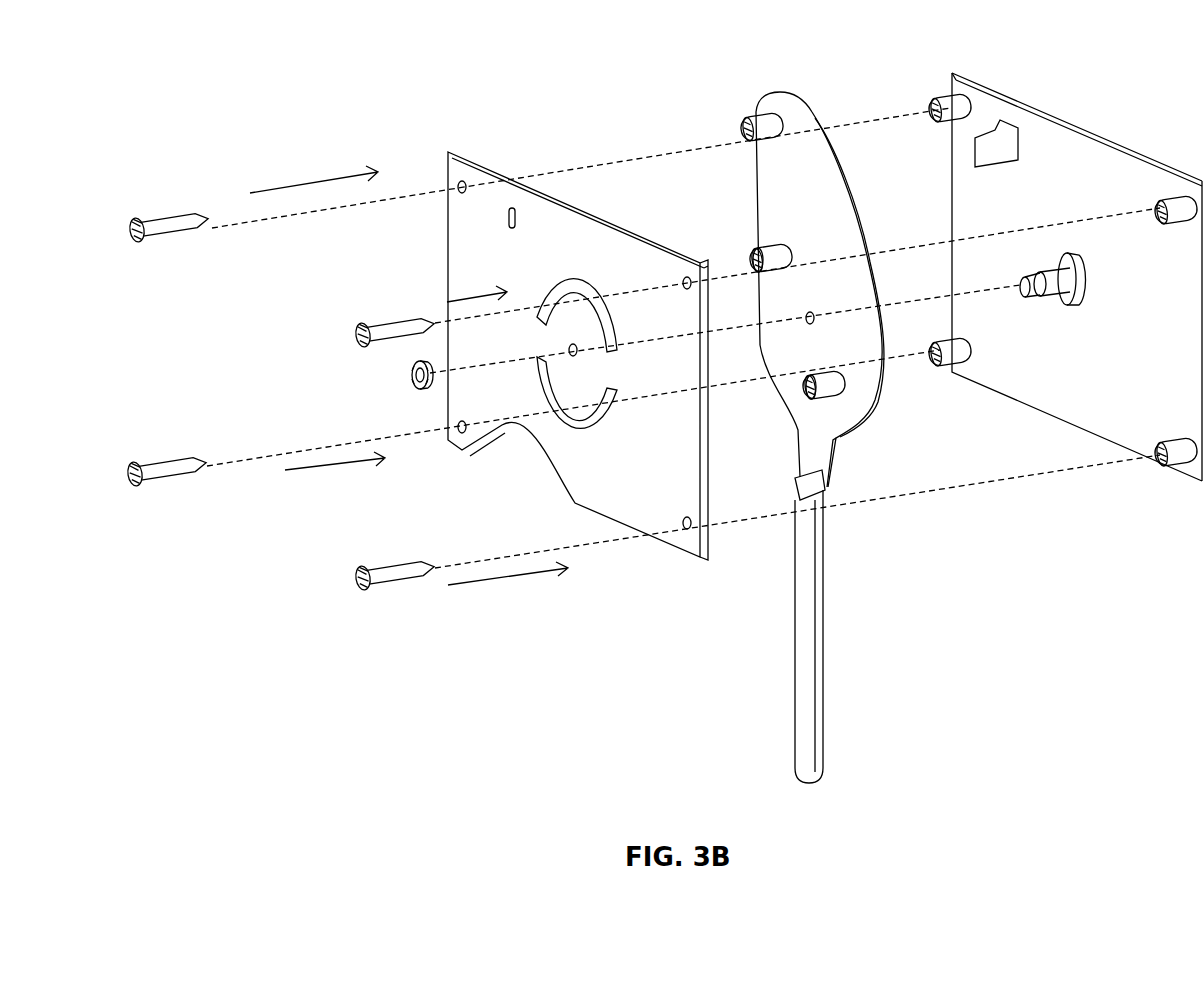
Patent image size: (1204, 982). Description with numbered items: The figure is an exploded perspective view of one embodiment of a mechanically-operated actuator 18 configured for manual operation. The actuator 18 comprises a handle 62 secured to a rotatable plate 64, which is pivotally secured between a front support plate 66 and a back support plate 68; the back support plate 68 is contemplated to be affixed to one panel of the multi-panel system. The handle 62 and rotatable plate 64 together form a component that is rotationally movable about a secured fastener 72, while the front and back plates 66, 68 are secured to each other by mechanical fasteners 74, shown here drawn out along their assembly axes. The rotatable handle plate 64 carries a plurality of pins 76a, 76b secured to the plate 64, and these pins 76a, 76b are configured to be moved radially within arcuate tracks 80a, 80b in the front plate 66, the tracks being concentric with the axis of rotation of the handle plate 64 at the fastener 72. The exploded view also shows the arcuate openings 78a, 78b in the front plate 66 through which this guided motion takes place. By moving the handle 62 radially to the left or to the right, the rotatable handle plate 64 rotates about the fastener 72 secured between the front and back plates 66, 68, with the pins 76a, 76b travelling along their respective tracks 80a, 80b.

The actuator 18 is at (572, 95).
The handle 62 is at (803, 620).
The rotatable plate 64 is at (803, 108).
The front support plate 66 is at (627, 533).
The back support plate 68 is at (1082, 170).
The secured fastener 72 is at (408, 386).
The mechanical fasteners 74 is at (358, 575).
The pin 76a is at (781, 250).
The pin 76b is at (838, 386).
The first arcuate slot 78a is at (570, 280).
The second arcuate slot 78b is at (592, 428).
The arcuate track 80a is at (765, 262).
The arcuate track 80b is at (822, 393).